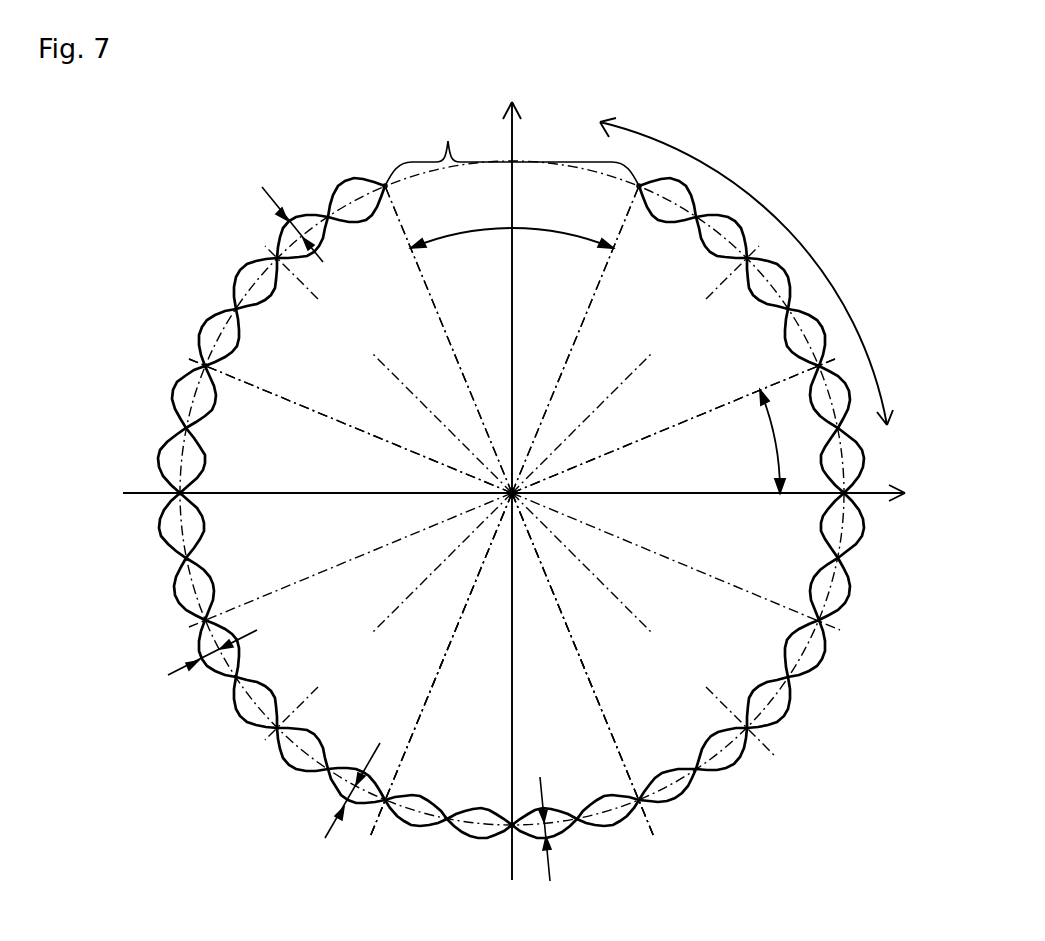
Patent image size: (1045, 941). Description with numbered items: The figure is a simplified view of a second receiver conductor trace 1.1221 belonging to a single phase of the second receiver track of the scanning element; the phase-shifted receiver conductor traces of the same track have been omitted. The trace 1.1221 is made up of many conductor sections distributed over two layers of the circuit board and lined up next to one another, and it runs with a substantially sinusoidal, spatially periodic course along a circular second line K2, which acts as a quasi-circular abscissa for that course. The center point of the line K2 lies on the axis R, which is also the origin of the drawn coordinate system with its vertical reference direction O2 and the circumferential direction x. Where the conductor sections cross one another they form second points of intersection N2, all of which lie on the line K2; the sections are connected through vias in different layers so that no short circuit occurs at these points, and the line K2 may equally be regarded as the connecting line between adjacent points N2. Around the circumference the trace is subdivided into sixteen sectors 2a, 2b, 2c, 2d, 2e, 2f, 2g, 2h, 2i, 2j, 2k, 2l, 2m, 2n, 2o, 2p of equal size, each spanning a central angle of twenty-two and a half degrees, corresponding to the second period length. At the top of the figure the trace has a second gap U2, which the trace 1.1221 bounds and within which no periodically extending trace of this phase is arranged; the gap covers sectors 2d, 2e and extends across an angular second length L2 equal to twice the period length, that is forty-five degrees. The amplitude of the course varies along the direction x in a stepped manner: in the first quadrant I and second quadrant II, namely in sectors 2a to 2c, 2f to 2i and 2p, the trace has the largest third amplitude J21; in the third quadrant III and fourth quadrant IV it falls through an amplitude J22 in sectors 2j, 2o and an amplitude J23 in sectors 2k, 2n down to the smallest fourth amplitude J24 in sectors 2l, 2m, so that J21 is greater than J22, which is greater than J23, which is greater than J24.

The second receiver conductor trace 1.1221 is at (233, 278).
The circular second line K2 is at (183, 528).
The second points of intersection N2 is at (385, 186).
The third amplitude J21 is at (292, 213).
The amplitude J22 is at (210, 668).
The amplitude J23 is at (331, 790).
The fourth amplitude J24 is at (572, 829).
The second gap U2 is at (512, 147).
The vertical reference axis O2 is at (514, 491).
The angular second length L2 is at (512, 221).
The circumferential direction x is at (746, 271).
The axis R is at (510, 494).
The sector 2a is at (673, 426).
The sector 2b is at (673, 426).
The sector 2c is at (635, 369).
The sector 2d is at (575, 339).
The sector 2e is at (448, 339).
The sector 2f is at (388, 369).
The sector 2g is at (350, 426).
The sector 2h is at (350, 426).
The sector 2i is at (350, 560).
The sector 2j is at (388, 616).
The sector 2k is at (441, 665).
The sector 2l is at (441, 665).
The sector 2m is at (583, 665).
The sector 2n is at (583, 665).
The sector 2o is at (643, 624).
The sector 2p is at (676, 561).
The first quadrant I is at (592, 339).
The second quadrant II is at (422, 339).
The third quadrant III is at (422, 665).
The fourth quadrant IV is at (602, 665).